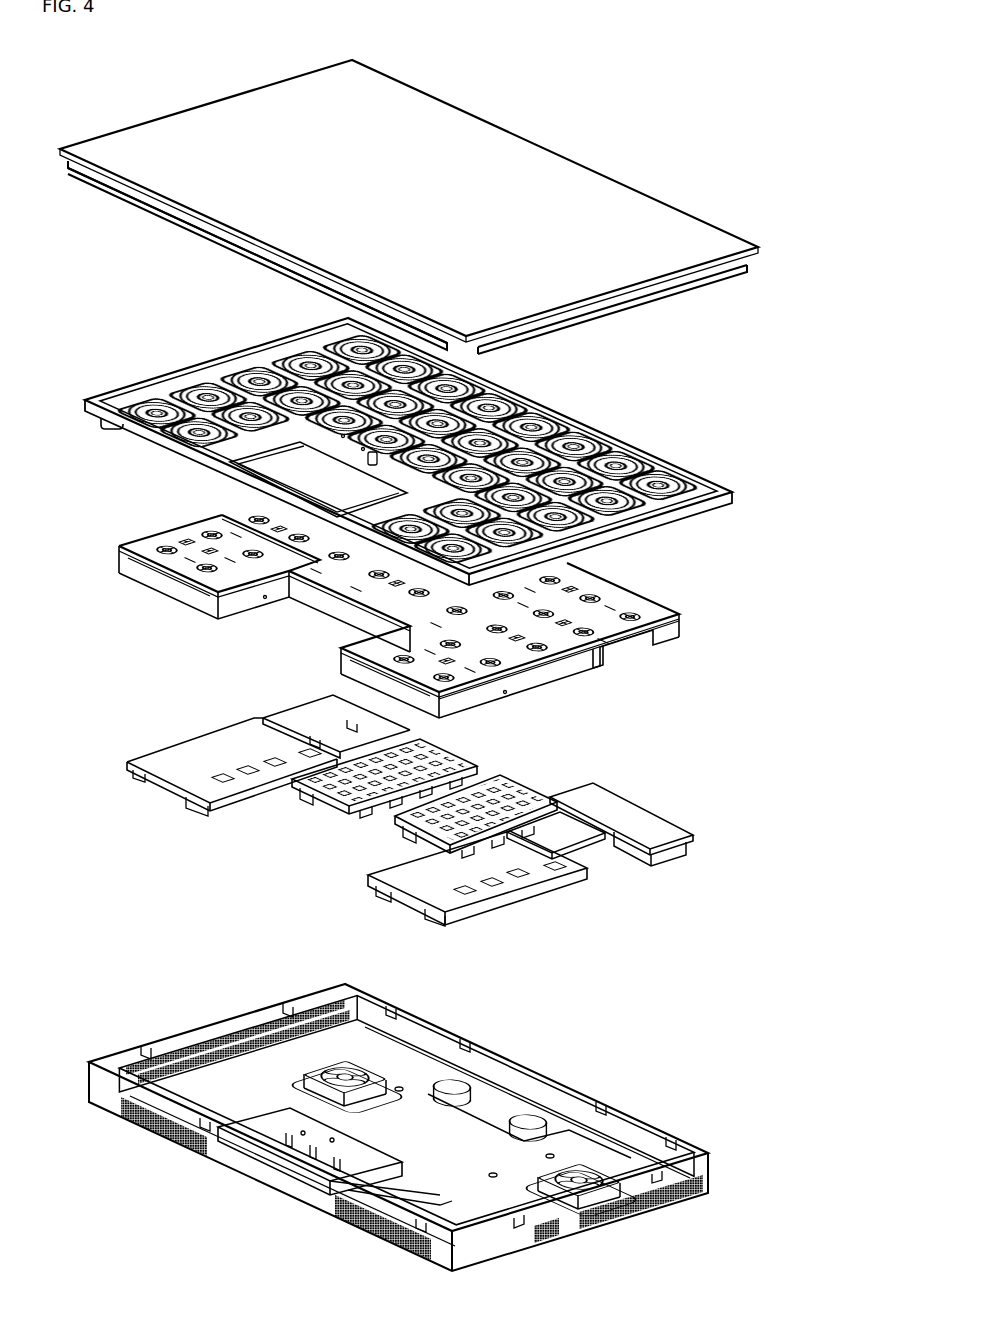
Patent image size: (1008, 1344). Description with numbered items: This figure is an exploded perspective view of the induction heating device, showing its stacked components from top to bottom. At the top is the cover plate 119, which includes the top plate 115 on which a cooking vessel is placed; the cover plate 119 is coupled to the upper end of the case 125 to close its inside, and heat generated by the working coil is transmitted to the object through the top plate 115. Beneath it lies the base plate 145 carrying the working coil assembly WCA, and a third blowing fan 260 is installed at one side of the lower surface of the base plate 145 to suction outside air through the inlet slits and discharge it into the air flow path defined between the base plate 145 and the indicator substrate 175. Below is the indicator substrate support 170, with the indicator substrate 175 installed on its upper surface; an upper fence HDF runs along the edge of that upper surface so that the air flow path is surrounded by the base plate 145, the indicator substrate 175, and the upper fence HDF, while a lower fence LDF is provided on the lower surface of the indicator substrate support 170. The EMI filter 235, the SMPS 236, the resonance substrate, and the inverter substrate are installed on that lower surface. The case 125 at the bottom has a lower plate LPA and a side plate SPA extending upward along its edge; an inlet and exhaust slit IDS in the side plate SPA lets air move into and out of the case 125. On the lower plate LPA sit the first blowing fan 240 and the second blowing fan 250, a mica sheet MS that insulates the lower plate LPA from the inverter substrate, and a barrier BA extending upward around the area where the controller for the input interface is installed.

The top plate 115 is at (474, 130).
The cover plate 119 is at (682, 192).
The base plate 145 is at (203, 372).
The third blowing fan 260 is at (104, 430).
The working coil assembly WCA is at (675, 478).
The indicator substrate 175 is at (627, 608).
The indicator substrate support 170 is at (684, 627).
The lower fence LDF is at (162, 583).
The upper fence HDF is at (338, 635).
The EMI filter 235 is at (637, 817).
The SMPS 236 is at (567, 830).
The side plate SPA is at (426, 1039).
The mica sheet MS is at (438, 1129).
The lower plate LPA is at (493, 1103).
The second blowing fan 250 is at (535, 1112).
The first blowing fan 240 is at (593, 1163).
The case 125 is at (711, 1136).
The inlet and exhaust slit IDS is at (154, 1129).
The barrier BA is at (259, 1129).